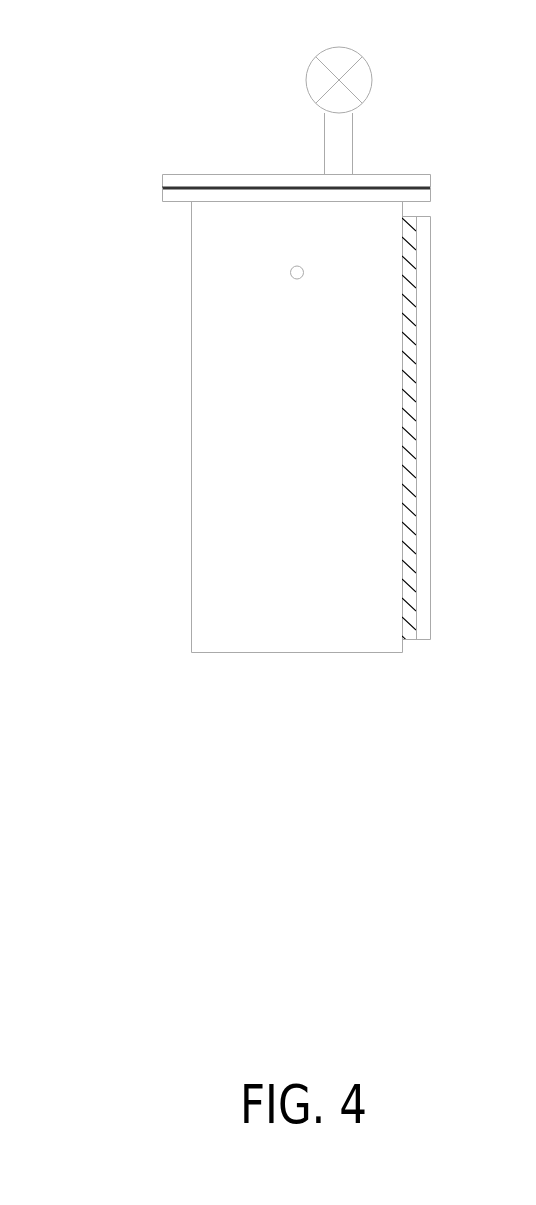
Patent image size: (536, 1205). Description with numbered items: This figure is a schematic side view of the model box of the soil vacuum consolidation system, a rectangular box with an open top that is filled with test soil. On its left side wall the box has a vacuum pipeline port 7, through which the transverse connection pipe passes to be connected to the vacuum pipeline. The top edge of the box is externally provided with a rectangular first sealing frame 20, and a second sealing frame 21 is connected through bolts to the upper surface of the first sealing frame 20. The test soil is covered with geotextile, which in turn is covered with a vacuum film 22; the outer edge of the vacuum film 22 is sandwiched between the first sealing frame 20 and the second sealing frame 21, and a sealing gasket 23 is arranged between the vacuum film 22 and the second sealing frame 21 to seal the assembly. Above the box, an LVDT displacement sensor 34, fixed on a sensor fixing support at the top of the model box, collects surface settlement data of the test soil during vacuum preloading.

The vacuum pipeline port 7 is at (290, 272).
The first sealing frame 20 is at (161, 198).
The second sealing frame 21 is at (162, 172).
The vacuum film 22 is at (162, 188).
The sealing gasket 23 is at (162, 183).
The LVDT displacement sensor 34 is at (333, 56).